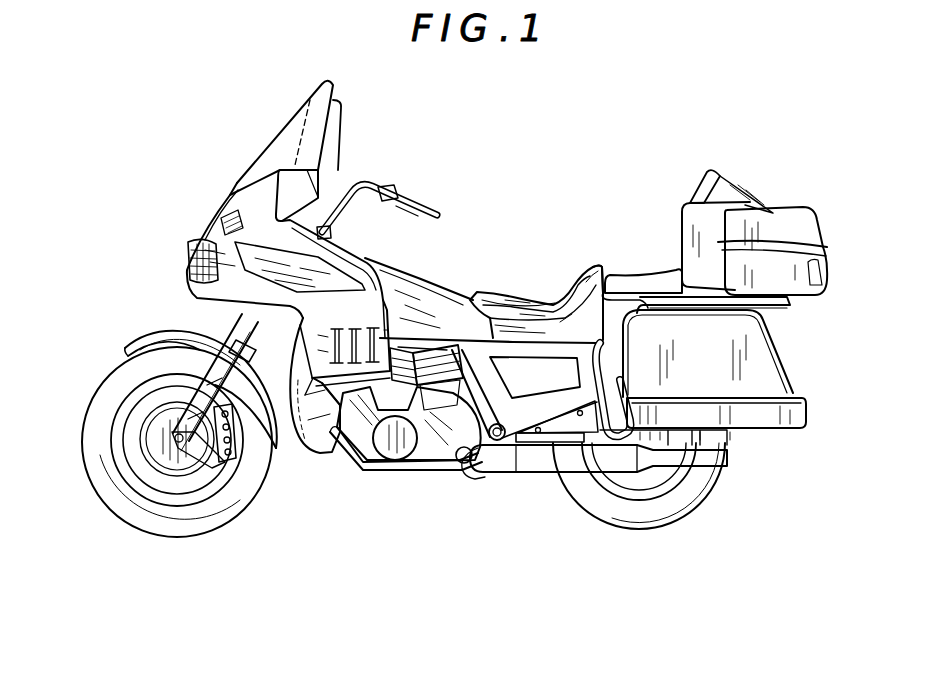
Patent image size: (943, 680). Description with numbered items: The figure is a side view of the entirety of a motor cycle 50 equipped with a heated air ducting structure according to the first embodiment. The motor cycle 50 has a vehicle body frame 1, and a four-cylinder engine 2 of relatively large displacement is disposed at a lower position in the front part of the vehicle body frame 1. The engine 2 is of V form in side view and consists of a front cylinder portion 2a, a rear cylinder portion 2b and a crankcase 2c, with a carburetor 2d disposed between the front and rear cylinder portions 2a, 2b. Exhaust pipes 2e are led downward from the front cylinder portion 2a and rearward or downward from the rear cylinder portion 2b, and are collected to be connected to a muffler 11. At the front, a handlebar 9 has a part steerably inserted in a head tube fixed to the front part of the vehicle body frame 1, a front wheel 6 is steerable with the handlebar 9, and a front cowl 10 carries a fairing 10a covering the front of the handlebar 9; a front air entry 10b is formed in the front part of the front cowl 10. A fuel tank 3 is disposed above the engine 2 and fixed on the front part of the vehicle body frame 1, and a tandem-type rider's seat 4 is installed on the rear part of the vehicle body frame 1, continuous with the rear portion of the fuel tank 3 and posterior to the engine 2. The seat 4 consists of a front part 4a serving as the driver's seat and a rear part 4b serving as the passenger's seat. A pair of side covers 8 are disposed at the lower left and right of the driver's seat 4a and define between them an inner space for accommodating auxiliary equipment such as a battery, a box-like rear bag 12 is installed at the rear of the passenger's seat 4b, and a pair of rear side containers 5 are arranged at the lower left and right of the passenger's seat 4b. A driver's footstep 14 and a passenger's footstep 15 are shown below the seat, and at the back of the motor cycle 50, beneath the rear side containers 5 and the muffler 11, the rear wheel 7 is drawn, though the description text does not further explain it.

The vehicle body frame 1 is at (420, 331).
The engine 2 is at (350, 438).
The front cylinder portion 2a is at (320, 434).
The rear cylinder portion 2b is at (445, 358).
The crankcase 2c is at (396, 460).
The carburetor 2d is at (397, 345).
The exhaust pipes 2e is at (365, 477).
The fuel tank 3 is at (407, 275).
The rider's seat 4 is at (603, 267).
The front part of seat 4a is at (527, 305).
The rear part of seat 4b is at (640, 278).
The rear side containers 5 is at (785, 353).
The front wheel 6 is at (227, 500).
The rear wheel 7 is at (693, 497).
The side covers 8 is at (547, 377).
The handlebar 9 is at (410, 191).
The front cowl 10 is at (233, 267).
The fairing 10a is at (300, 126).
The front air entry 10b is at (272, 333).
The muffler 11 is at (573, 463).
The rear bag 12 is at (770, 218).
The driver's footstep 14 is at (463, 462).
The passenger's footstep 15 is at (527, 444).
The motor cycle 50 is at (567, 170).